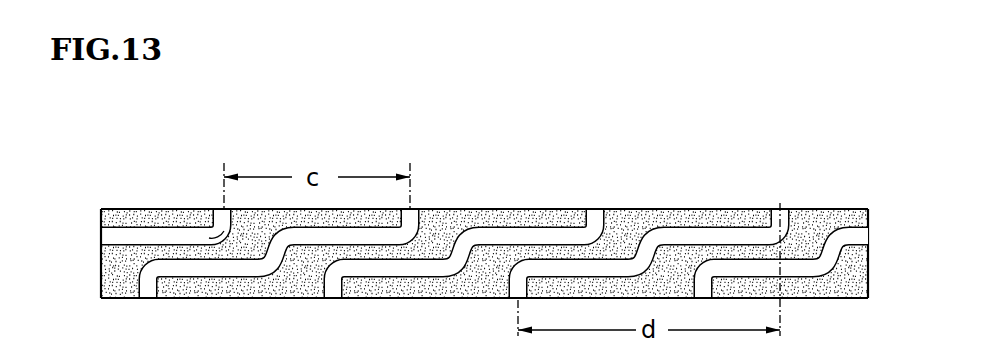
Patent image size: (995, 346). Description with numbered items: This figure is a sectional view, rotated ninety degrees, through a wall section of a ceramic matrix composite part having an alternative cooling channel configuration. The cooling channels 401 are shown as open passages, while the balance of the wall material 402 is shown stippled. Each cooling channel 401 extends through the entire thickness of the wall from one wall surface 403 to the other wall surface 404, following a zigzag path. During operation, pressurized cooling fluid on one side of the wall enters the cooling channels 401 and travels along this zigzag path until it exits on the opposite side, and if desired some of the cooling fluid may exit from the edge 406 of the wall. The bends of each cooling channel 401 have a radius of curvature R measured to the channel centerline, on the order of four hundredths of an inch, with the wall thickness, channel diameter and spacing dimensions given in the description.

The cooling channel 401 is at (173, 238).
The wall material 402 is at (626, 227).
The wall surface 403 is at (456, 210).
The other wall surface 404 is at (392, 299).
The edge of the wall 406 is at (100, 251).
The radius of curvature R is at (213, 222).